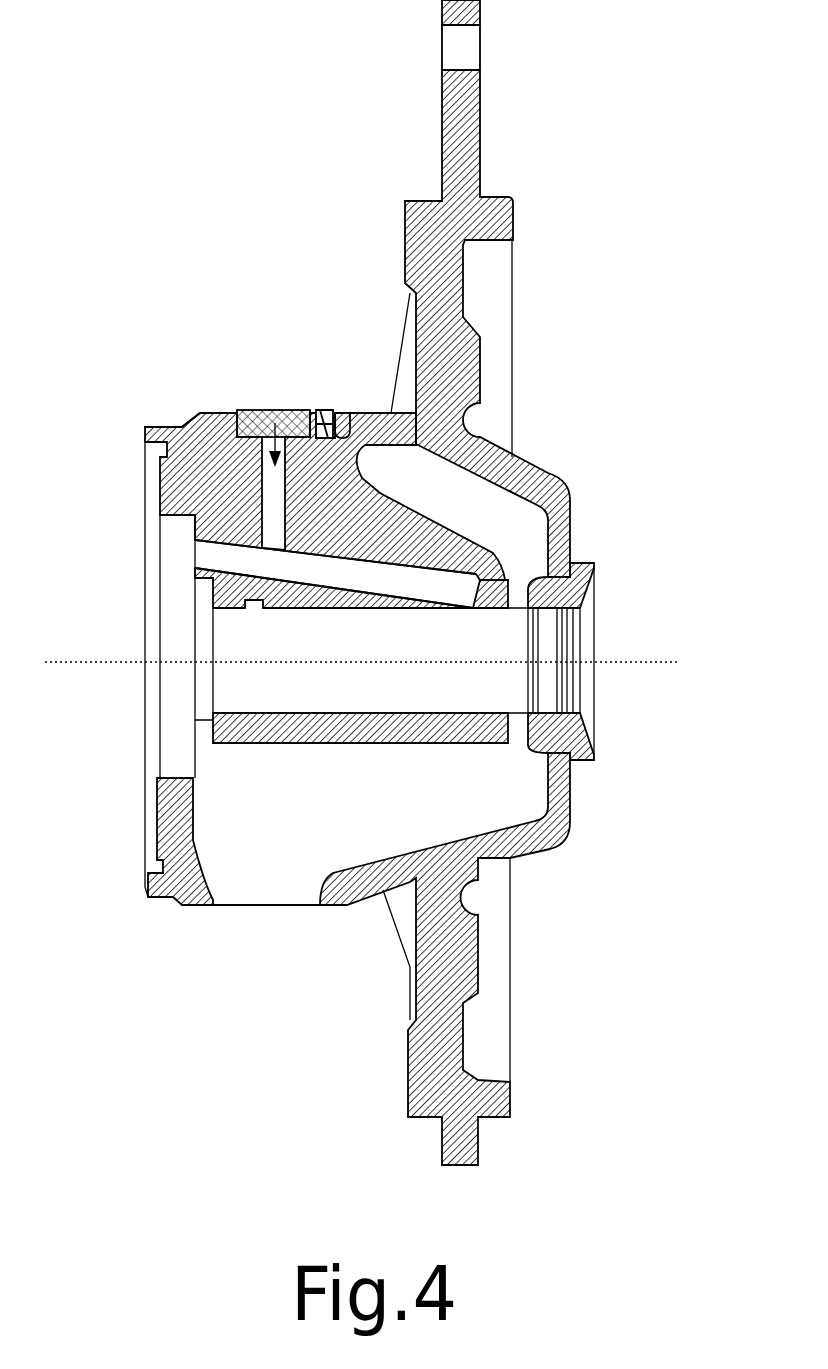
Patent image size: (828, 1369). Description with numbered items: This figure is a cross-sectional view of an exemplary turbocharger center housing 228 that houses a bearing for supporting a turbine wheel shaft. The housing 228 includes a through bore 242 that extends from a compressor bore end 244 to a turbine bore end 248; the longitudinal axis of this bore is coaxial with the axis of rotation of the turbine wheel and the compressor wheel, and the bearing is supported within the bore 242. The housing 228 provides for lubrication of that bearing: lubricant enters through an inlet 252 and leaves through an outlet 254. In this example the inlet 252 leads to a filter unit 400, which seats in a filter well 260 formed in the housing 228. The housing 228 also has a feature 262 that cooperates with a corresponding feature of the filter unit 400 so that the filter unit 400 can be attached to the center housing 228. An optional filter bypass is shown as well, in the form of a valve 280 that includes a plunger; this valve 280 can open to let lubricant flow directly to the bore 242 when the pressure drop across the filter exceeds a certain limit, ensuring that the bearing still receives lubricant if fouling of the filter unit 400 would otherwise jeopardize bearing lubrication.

The housing 228 is at (224, 488).
The through bore 242 is at (292, 656).
The compressor bore end 244 is at (131, 572).
The turbine bore end 248 is at (601, 707).
The inlet 252 is at (344, 413).
The outlet 254 is at (250, 921).
The filter well 260 is at (200, 412).
The feature 262 is at (278, 548).
The valve 280 is at (320, 410).
The filter unit 400 is at (263, 409).